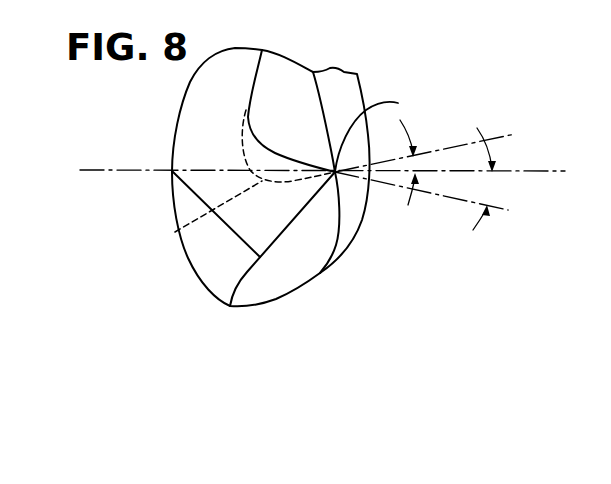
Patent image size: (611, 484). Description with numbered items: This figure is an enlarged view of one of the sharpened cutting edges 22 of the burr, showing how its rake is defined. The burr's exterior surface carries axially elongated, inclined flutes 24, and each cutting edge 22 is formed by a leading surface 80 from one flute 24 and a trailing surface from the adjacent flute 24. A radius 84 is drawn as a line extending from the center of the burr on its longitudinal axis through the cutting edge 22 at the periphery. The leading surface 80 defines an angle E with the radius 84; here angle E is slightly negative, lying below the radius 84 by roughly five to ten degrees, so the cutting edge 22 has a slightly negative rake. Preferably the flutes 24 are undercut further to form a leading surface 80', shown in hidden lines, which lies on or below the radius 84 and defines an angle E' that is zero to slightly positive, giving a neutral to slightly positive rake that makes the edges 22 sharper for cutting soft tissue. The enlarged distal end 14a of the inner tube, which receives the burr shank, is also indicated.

The flute 24 is at (280, 70).
The distal end of inner tube 14a is at (340, 73).
The leading surface 80 is at (291, 111).
The leading surface 80' is at (223, 190).
The cutting edge 22 is at (389, 127).
The radius 84 is at (538, 170).
The angle E' is at (405, 205).
The angle E is at (476, 233).